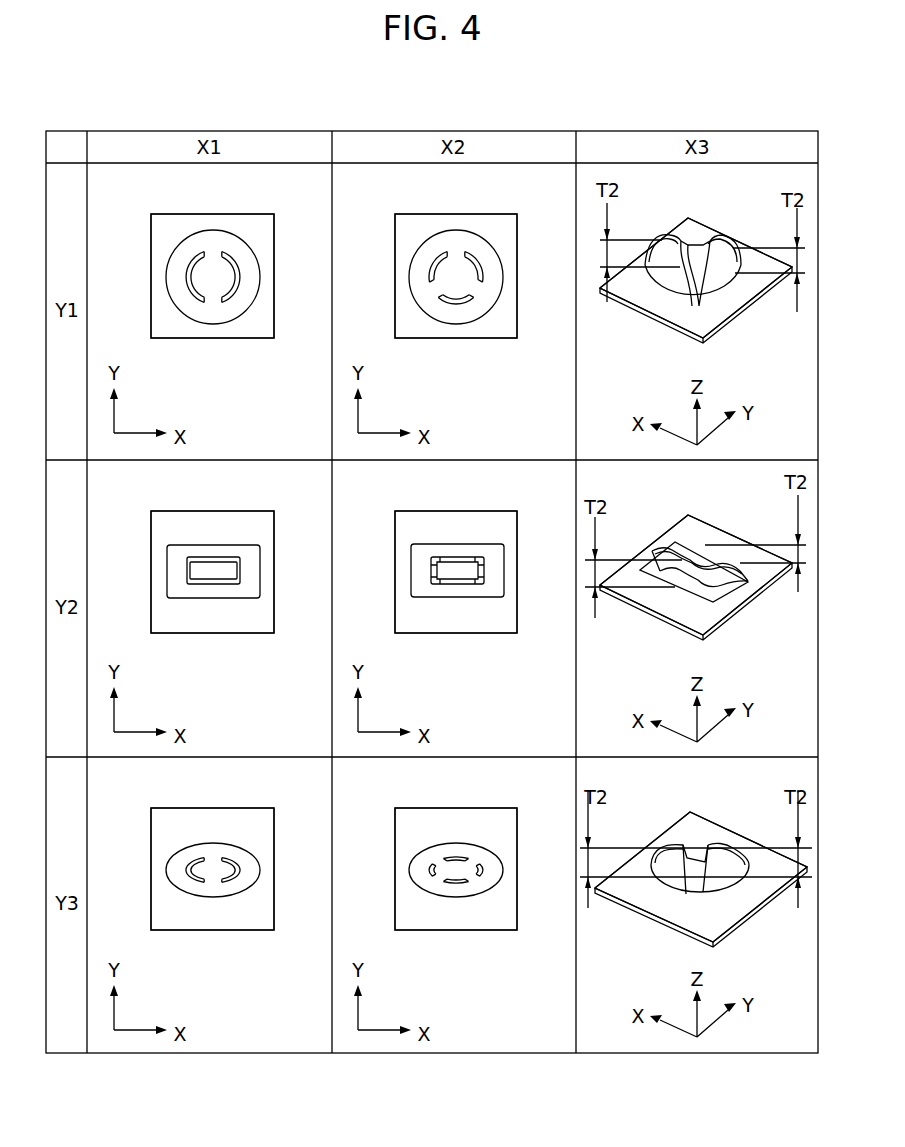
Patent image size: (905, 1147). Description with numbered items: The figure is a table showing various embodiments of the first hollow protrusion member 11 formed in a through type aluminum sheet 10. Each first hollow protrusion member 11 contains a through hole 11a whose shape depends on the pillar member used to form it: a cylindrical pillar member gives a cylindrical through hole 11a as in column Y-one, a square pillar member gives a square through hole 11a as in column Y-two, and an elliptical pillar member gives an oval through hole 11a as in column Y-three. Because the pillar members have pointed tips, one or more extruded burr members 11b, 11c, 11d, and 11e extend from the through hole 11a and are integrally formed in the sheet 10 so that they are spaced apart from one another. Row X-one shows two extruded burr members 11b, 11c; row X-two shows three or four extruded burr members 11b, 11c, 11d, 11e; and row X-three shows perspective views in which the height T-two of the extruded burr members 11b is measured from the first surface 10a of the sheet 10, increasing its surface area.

The through type aluminum sheet 10 is at (247, 340).
The first surface 10a is at (260, 313).
The first hollow protrusion member 11 is at (187, 232).
The through hole 11a is at (217, 277).
The extruded burr member 11b is at (190, 290).
The extruded burr member 11c is at (232, 257).
The extruded burr member 11d is at (453, 300).
The extruded burr member 11e is at (452, 582).